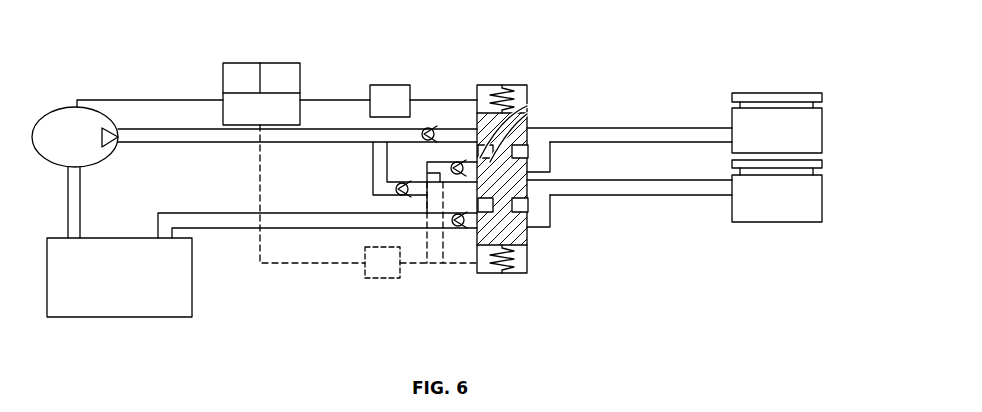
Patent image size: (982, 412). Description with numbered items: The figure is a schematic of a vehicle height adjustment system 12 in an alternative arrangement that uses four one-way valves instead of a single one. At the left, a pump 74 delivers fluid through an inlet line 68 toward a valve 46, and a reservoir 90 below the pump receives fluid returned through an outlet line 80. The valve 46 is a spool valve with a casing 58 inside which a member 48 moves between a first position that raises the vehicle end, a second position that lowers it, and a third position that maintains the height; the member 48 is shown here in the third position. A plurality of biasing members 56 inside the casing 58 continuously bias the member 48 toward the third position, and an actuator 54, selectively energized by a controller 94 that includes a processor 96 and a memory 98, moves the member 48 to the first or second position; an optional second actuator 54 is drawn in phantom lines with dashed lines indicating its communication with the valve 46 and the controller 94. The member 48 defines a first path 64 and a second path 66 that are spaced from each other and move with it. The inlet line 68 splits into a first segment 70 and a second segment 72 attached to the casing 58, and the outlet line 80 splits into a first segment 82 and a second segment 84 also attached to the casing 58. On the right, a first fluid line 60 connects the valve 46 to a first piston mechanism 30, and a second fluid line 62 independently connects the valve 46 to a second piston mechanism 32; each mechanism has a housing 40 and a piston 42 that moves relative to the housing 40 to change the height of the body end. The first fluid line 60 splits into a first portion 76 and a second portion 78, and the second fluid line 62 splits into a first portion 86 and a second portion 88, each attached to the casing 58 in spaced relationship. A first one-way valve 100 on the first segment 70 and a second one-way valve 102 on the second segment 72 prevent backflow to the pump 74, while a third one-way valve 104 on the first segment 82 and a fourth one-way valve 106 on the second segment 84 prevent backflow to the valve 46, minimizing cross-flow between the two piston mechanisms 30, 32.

The height adjustment system 12 is at (96, 44).
The first piston mechanism 30 is at (807, 158).
The second piston mechanism 32 is at (838, 232).
The housing 40 is at (815, 125).
The piston 42 is at (768, 94).
The valve 46 is at (575, 272).
The member 48 is at (476, 100).
The actuator 54 is at (380, 110).
The biasing members 56 is at (500, 90).
The casing 58 is at (488, 275).
The first fluid line 60 is at (680, 116).
The second fluid line 62 is at (680, 178).
The first path 64 is at (528, 113).
The second path 66 is at (530, 222).
The inlet line 68 is at (187, 143).
The first segment 70 is at (388, 155).
The second segment 72 is at (395, 150).
The pump 74 is at (62, 107).
The first portion 76 is at (536, 152).
The second portion 78 is at (553, 148).
The outlet line 80 is at (247, 228).
The first segment 82 is at (463, 240).
The second segment 84 is at (438, 162).
The first portion 86 is at (534, 213).
The second portion 88 is at (532, 208).
The reservoir 90 is at (93, 318).
The controller 94 is at (302, 99).
The processor 96 is at (233, 88).
The memory 98 is at (270, 88).
The first one-way valve 100 is at (428, 134).
The second one-way valve 102 is at (395, 190).
The third one-way valve 104 is at (448, 245).
The fourth one-way valve 106 is at (528, 107).